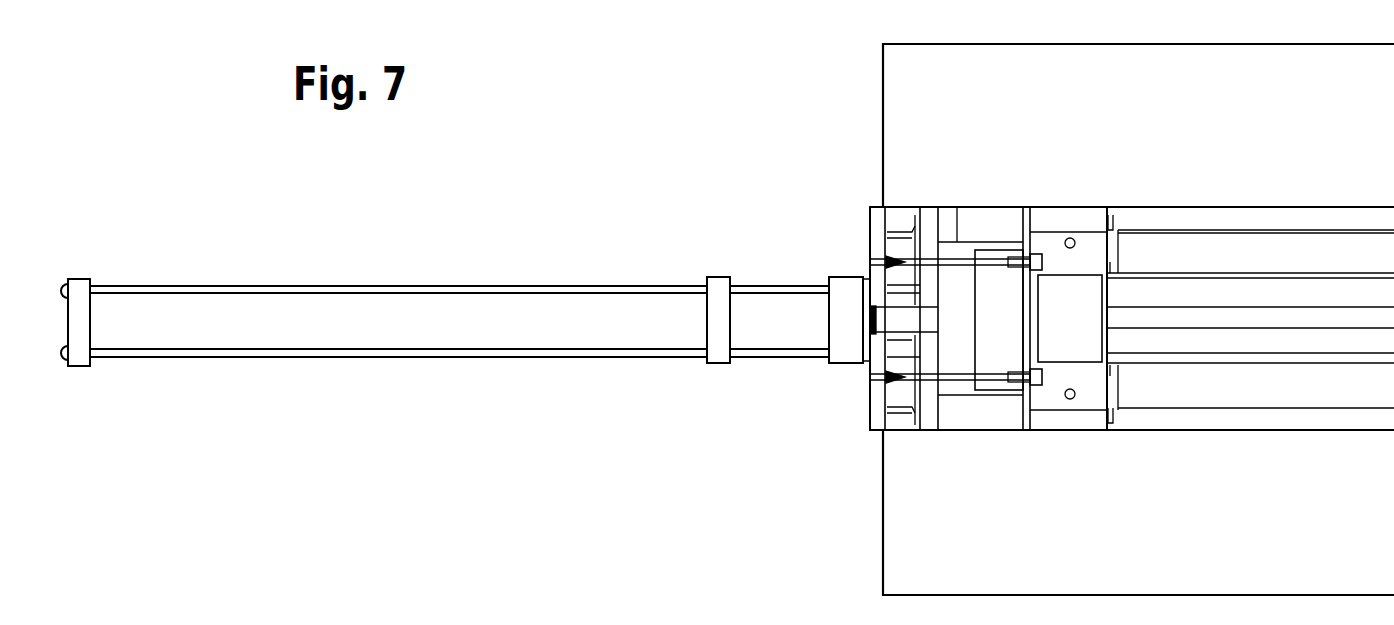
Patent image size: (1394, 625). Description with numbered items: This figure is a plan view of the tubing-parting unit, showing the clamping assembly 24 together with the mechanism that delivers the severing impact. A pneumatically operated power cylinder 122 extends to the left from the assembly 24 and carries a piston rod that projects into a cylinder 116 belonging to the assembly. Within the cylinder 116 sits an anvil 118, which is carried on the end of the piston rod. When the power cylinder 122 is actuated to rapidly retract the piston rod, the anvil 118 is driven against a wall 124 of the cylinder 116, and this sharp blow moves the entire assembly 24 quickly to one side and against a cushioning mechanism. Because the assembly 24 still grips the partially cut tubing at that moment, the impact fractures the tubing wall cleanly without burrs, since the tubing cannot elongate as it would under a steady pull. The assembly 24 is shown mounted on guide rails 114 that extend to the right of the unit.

The clamping assembly 24 is at (1073, 201).
The guide rails 114 is at (1165, 315).
The cylinder 116 is at (957, 207).
The anvil 118 is at (997, 317).
The pneumatically operated power cylinder 122 is at (771, 312).
The wall 124 is at (897, 242).